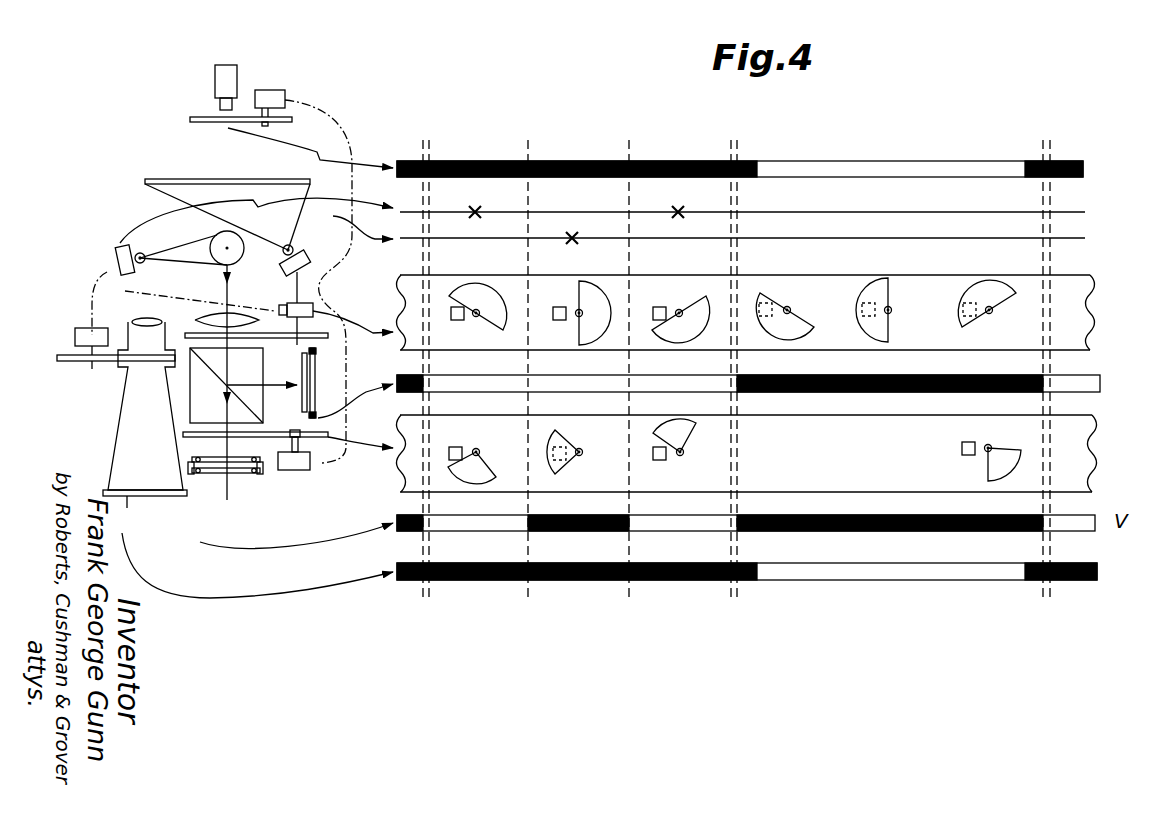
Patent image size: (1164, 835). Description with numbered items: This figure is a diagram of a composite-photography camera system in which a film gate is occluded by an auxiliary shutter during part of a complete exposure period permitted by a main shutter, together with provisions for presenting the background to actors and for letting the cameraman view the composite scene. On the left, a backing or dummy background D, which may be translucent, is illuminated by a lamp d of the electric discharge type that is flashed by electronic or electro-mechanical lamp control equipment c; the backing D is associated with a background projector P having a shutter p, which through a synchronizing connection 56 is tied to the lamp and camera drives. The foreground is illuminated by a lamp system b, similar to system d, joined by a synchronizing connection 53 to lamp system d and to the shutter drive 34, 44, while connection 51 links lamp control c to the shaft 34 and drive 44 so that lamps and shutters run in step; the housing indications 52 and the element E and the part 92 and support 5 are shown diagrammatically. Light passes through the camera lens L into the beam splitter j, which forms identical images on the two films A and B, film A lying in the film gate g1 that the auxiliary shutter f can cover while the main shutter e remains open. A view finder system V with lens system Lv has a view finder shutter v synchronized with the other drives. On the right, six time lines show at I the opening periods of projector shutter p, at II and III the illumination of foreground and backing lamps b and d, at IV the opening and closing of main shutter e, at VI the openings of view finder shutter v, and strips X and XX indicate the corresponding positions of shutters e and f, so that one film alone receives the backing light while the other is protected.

The background projector P is at (230, 80).
The projector shutter p is at (200, 117).
The synchronizing connection 56 is at (333, 111).
The backing D is at (172, 179).
The disc E is at (211, 219).
The lamp system b is at (121, 250).
The lamp control equipment c is at (303, 258).
The backing lamp d is at (356, 223).
The housing 52 is at (107, 273).
The synchronizing connection 53 is at (174, 285).
The shaft 34 is at (292, 297).
The connection 51 is at (300, 292).
The camera lens L is at (196, 319).
The view finder lens system Lv is at (143, 318).
The view finder system V is at (132, 415).
The view finder shutter v is at (109, 364).
The beam splitter j is at (300, 356).
The plate 92 is at (301, 401).
The film B is at (355, 401).
The main shutter e is at (478, 306).
The auxiliary shutter f is at (470, 470).
The shutter drive 44 is at (297, 472).
The film gate g1 is at (240, 476).
The film A is at (287, 533).
The support 5 is at (251, 552).
The time line I is at (751, 169).
The time line II is at (754, 212).
The time line III is at (756, 238).
The strip X is at (763, 312).
The time line IV is at (769, 384).
The strip XX is at (768, 453).
The time line VI is at (766, 572).